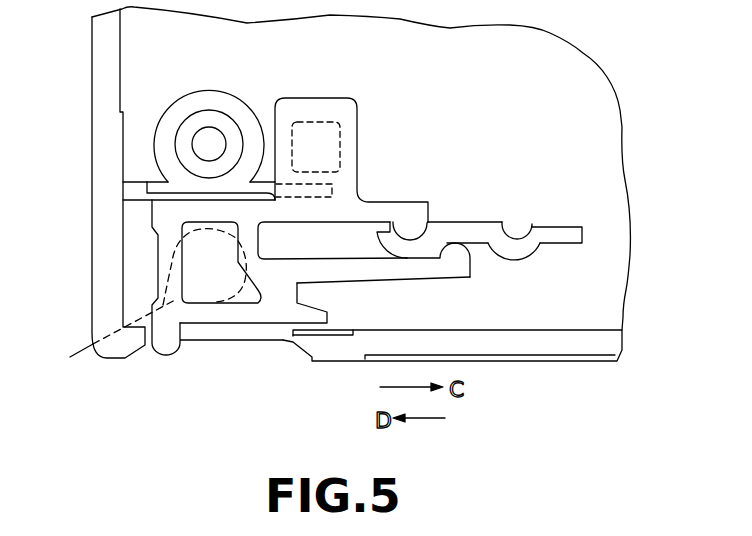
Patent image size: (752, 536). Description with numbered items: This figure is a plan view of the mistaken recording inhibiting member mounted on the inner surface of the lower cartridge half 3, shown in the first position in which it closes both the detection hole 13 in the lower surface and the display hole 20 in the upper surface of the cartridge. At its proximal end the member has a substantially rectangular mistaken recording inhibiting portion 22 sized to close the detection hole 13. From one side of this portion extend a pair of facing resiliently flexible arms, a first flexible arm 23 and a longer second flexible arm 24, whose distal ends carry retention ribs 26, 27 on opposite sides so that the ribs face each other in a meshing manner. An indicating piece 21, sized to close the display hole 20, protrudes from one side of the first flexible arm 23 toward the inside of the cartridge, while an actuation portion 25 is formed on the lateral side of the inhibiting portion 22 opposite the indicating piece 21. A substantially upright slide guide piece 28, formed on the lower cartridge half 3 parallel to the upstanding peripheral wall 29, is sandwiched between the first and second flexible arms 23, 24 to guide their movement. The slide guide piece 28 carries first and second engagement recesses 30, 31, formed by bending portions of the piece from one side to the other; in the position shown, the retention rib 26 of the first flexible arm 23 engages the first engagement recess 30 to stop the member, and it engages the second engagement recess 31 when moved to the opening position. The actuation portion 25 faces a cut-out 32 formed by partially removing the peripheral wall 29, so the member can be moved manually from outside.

The lower cartridge half 3 is at (92, 112).
The detection hole 13 is at (108, 338).
The display hole 20 is at (313, 130).
The indicating piece 21 is at (343, 120).
The mistaken recording inhibiting portion 22 is at (157, 282).
The first flexible arm 23 is at (375, 208).
The second flexible arm 24 is at (408, 272).
The actuation portion 25 is at (167, 341).
The retention rib 26 is at (415, 227).
The retention rib 27 is at (462, 257).
The slide guide piece 28 is at (560, 230).
The upstanding peripheral wall 29 is at (520, 347).
The first engagement recess 30 is at (392, 230).
The second engagement recess 31 is at (545, 238).
The cut-out 32 is at (283, 341).